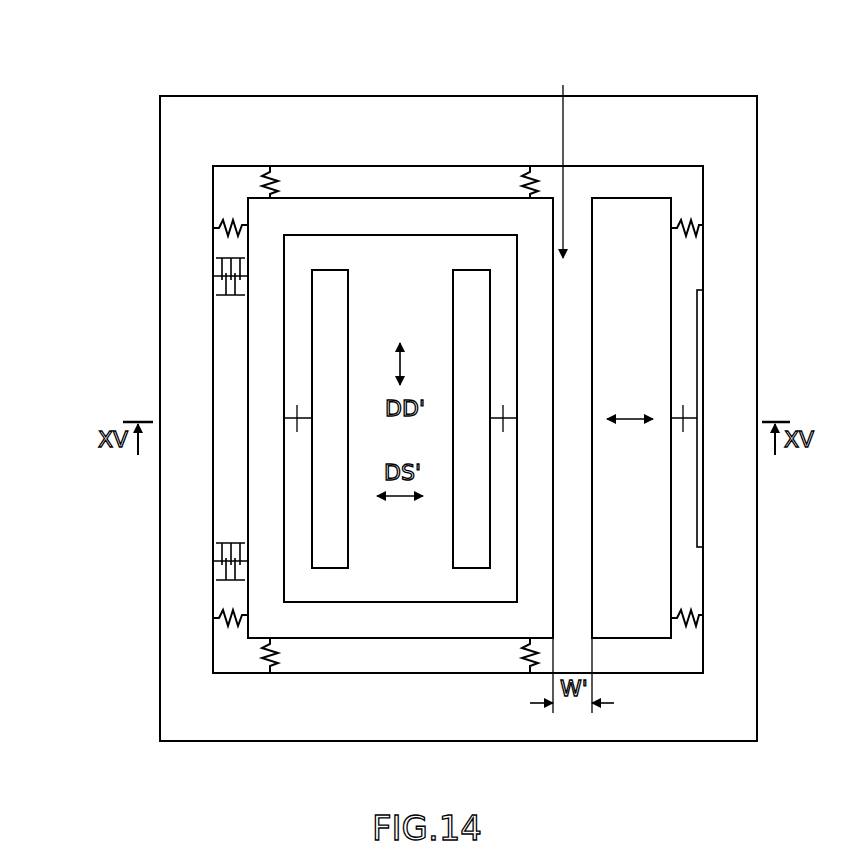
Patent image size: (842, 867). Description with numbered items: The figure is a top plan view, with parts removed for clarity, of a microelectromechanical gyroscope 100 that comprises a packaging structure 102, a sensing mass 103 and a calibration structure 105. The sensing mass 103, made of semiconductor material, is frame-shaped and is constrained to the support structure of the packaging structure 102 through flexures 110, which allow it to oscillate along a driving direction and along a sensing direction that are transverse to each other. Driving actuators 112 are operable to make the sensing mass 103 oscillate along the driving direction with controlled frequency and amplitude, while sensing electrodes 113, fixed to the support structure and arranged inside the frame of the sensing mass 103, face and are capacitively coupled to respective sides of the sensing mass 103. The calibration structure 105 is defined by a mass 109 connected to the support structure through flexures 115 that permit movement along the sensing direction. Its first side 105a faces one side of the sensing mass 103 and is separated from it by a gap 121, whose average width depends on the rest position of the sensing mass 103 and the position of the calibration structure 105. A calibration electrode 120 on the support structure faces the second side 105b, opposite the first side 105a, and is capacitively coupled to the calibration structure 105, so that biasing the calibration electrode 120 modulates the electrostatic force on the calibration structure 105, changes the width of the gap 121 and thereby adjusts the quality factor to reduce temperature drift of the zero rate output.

The microelectromechanical gyroscope 100 is at (690, 78).
The packaging structure 102 is at (397, 80).
The sensing mass 103 is at (320, 623).
The calibration structure 105 is at (645, 615).
The first side 105a is at (583, 220).
The second side 105b is at (672, 563).
The mass 109 is at (657, 208).
The flexures 110 is at (232, 216).
The driving actuators 112 is at (216, 276).
The sensing electrodes 113 is at (323, 270).
The flexures 115 is at (700, 222).
The calibration electrode 120 is at (700, 354).
The gap 121 is at (568, 158).